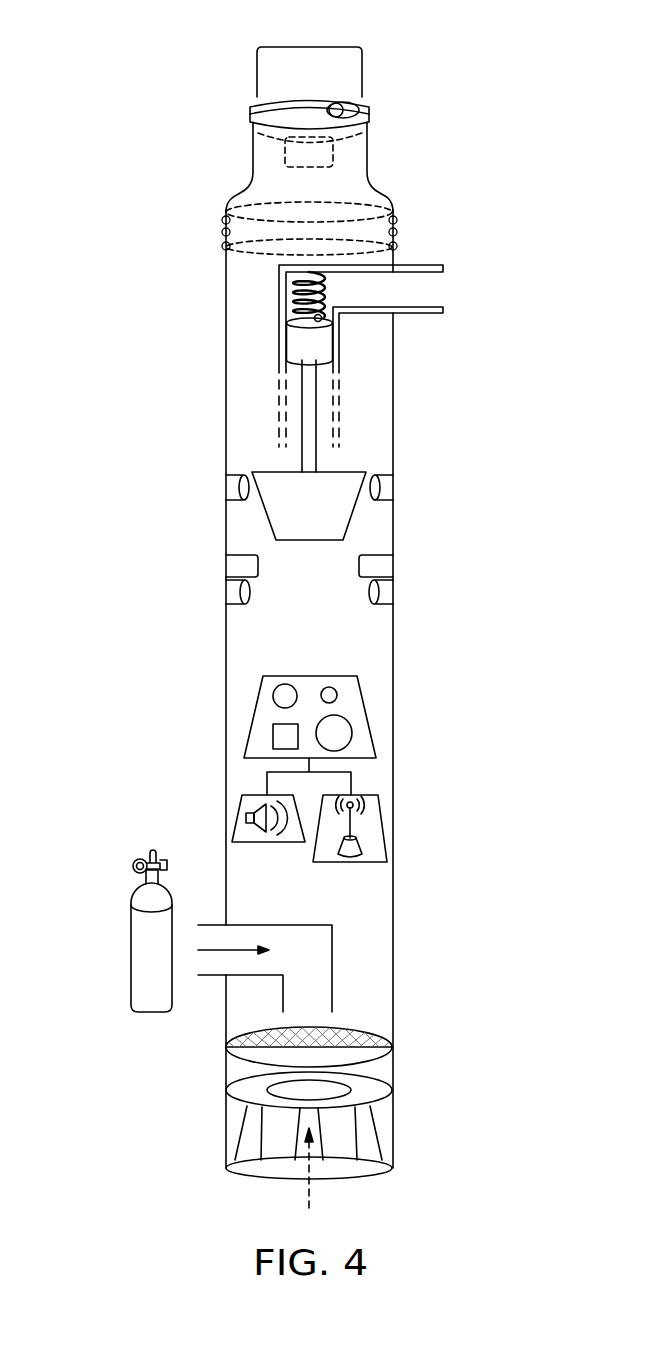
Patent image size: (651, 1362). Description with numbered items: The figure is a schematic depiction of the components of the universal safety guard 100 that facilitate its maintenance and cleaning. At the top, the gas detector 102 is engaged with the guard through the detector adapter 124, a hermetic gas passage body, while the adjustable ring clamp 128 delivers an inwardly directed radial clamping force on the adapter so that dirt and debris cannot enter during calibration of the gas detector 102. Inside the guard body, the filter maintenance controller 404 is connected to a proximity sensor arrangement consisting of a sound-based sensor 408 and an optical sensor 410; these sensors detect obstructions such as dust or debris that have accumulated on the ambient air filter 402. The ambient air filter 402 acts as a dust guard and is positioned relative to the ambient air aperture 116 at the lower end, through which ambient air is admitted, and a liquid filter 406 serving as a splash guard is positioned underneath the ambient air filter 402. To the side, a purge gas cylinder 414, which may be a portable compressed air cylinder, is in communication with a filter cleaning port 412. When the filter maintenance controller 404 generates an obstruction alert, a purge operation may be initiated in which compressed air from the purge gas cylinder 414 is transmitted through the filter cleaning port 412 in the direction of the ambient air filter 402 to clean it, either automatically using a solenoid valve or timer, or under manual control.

The universal safety guard 100 is at (476, 82).
The gas detector 102 is at (362, 74).
The detector adapter 124 is at (221, 151).
The adjustable ring clamp 128 is at (238, 103).
The ambient air aperture 116 is at (314, 1172).
The ambient air filter 402 is at (226, 1043).
The filter maintenance controller 404 is at (250, 731).
The liquid filter 406 is at (238, 1142).
The sound-based sensor 408 is at (236, 824).
The optical sensor 410 is at (382, 824).
The filter cleaning port 412 is at (313, 940).
The purge gas cylinder 414 is at (131, 955).